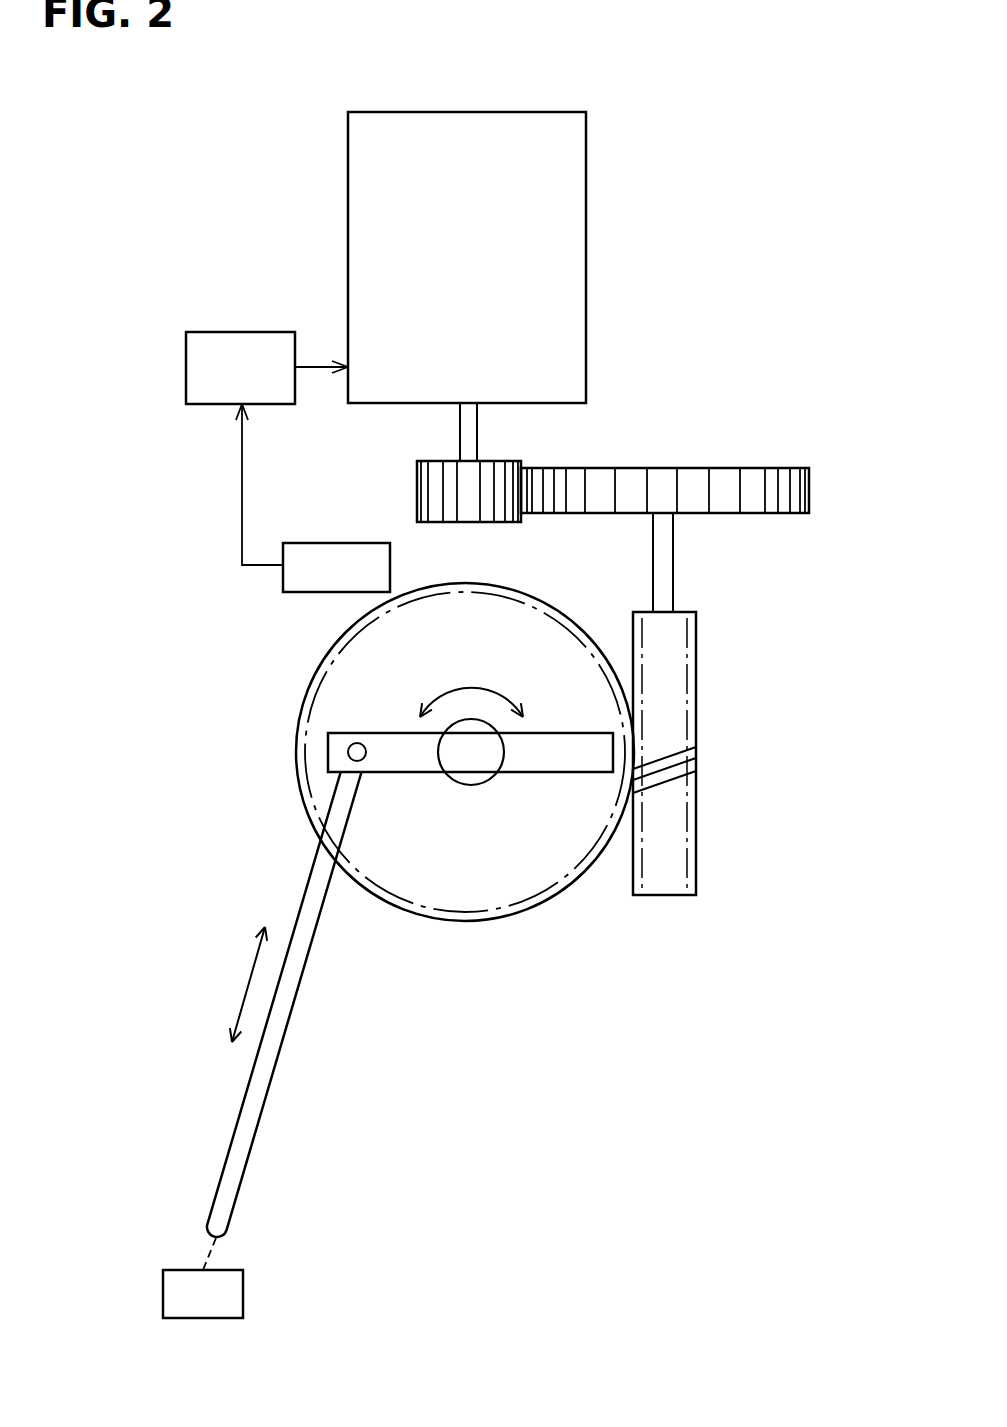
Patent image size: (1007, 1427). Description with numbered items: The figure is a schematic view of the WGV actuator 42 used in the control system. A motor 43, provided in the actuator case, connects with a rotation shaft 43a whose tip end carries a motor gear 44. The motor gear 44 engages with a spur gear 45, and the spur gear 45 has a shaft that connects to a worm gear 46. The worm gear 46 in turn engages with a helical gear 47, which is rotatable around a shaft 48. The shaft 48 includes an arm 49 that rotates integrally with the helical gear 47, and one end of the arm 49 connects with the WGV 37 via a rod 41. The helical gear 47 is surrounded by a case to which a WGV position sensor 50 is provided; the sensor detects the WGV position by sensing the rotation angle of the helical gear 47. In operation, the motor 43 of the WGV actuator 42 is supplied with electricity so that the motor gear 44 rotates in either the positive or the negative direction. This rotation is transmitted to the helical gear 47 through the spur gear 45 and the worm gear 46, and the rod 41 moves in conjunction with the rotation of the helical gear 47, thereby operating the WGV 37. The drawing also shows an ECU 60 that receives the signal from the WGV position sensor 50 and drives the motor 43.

The WGV 37 is at (228, 1270).
The rod 41 is at (283, 1007).
The WGV actuator 42 is at (688, 408).
The motor 43 is at (586, 213).
The rotation shaft 43a is at (477, 428).
The motor gear 44 is at (417, 488).
The spur gear 45 is at (757, 468).
The worm gear 46 is at (696, 712).
The helical gear 47 is at (308, 687).
The shaft 48 is at (497, 775).
The arm 49 is at (396, 772).
The WGV position sensor 50 is at (313, 543).
The ECU 60 is at (250, 332).